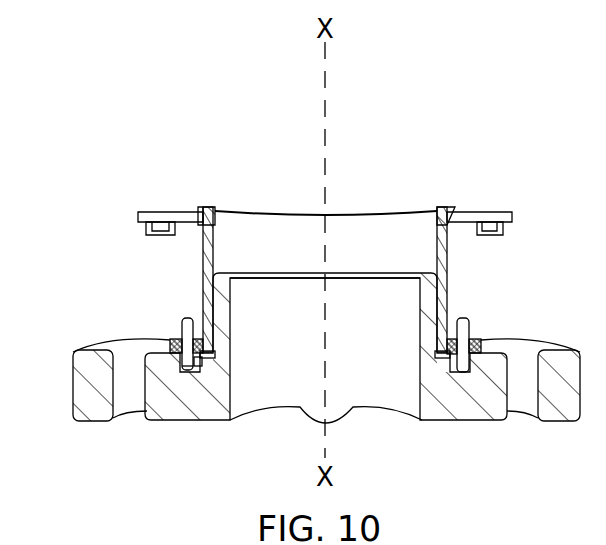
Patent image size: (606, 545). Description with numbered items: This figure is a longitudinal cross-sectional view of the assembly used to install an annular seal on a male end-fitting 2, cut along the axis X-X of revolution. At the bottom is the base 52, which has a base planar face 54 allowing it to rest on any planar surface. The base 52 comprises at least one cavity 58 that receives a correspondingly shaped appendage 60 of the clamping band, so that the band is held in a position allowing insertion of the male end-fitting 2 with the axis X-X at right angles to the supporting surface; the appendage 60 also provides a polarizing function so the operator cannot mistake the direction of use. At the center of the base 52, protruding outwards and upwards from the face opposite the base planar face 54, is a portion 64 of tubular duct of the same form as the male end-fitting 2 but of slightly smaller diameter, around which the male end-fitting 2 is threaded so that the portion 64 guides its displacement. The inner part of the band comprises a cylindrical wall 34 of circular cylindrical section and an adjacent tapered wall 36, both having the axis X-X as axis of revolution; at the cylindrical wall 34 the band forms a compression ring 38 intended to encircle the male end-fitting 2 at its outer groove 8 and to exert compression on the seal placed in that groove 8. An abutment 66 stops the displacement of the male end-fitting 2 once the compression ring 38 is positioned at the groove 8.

The male end-fitting 2 is at (400, 233).
The outer groove 8 is at (470, 343).
The cylindrical wall 34 is at (177, 334).
The tapered wall 36 is at (185, 337).
The compression ring 38 is at (477, 343).
The base 52 is at (87, 386).
The base planar face 54 is at (167, 422).
The cavity 58 is at (182, 367).
The appendage 60 is at (186, 360).
The portion of tubular duct 64 is at (383, 325).
The abutment 66 is at (208, 423).